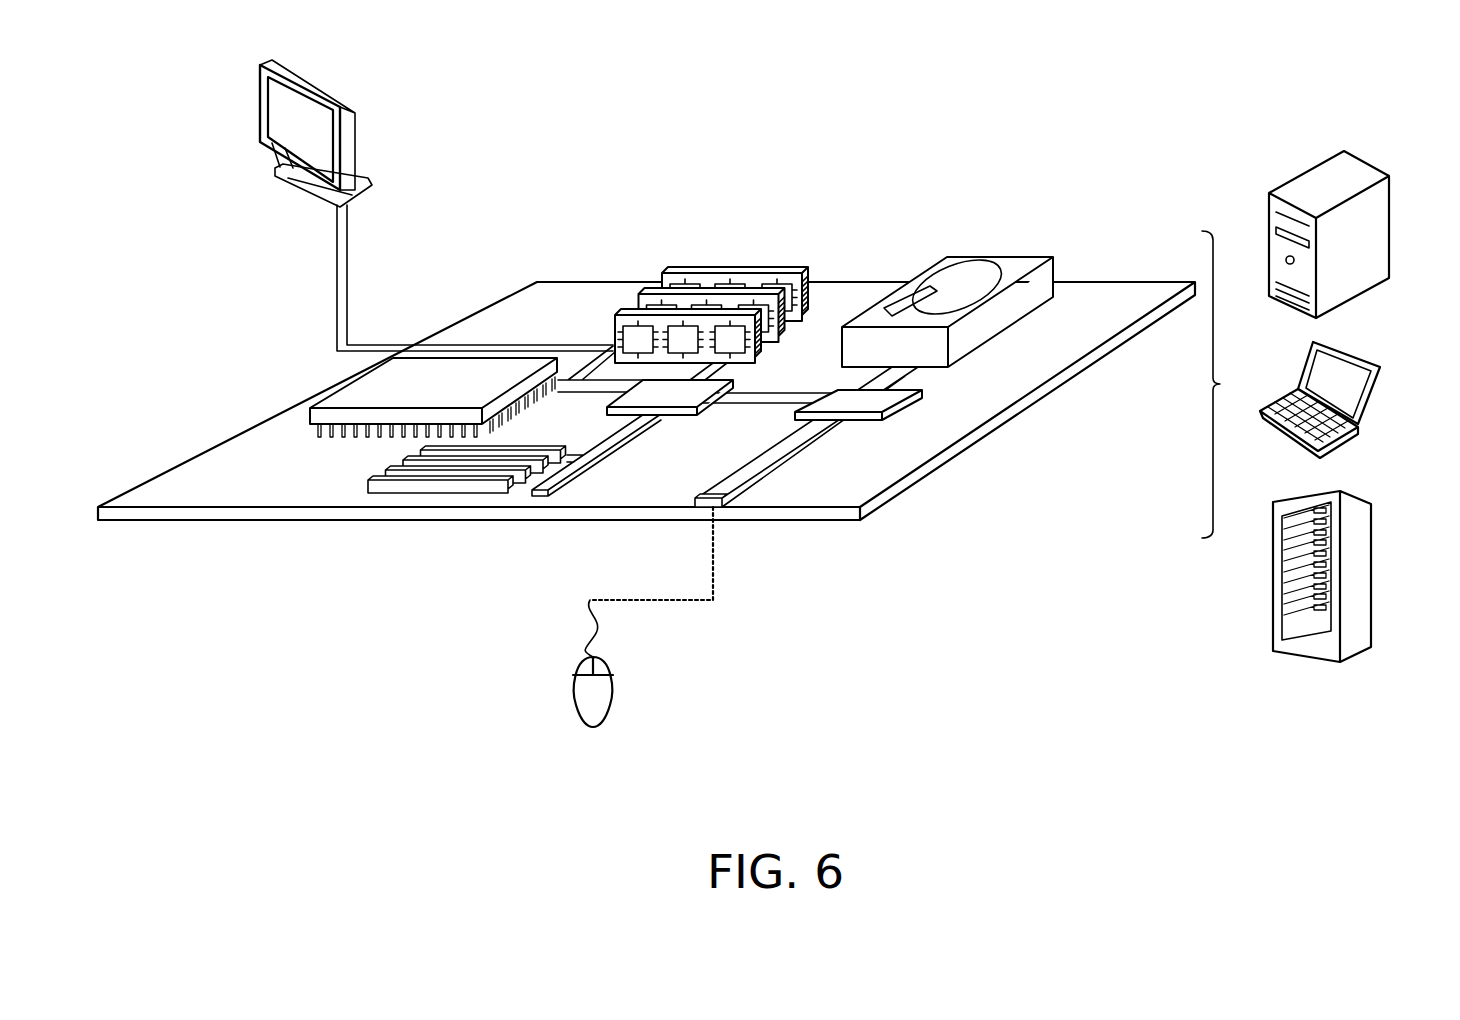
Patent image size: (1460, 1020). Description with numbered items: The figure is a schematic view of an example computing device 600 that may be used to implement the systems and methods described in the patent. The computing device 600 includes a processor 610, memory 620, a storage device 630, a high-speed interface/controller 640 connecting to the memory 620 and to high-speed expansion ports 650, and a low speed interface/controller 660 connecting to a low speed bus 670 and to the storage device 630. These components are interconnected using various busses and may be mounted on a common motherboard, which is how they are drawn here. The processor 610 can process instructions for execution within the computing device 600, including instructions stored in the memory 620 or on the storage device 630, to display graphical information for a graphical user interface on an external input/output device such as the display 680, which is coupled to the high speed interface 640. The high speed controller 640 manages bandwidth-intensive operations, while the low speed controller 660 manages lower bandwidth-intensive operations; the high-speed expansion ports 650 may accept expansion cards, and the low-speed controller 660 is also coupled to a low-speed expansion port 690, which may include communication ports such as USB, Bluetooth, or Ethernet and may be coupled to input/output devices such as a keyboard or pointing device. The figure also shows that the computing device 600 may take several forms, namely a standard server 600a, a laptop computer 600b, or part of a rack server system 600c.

The computing device 600 is at (813, 128).
The standard server 600a is at (1298, 173).
The laptop computer 600b is at (1356, 367).
The rack server system 600c is at (1364, 558).
The processor 610 is at (310, 410).
The memory 620 is at (728, 273).
The storage device 630 is at (997, 257).
The high-speed interface/controller 640 is at (672, 416).
The high-speed expansion ports 650 is at (368, 483).
The low speed interface/controller 660 is at (848, 398).
The low speed bus 670 is at (800, 468).
The display 680 is at (260, 107).
The low-speed expansion port 690 is at (730, 508).